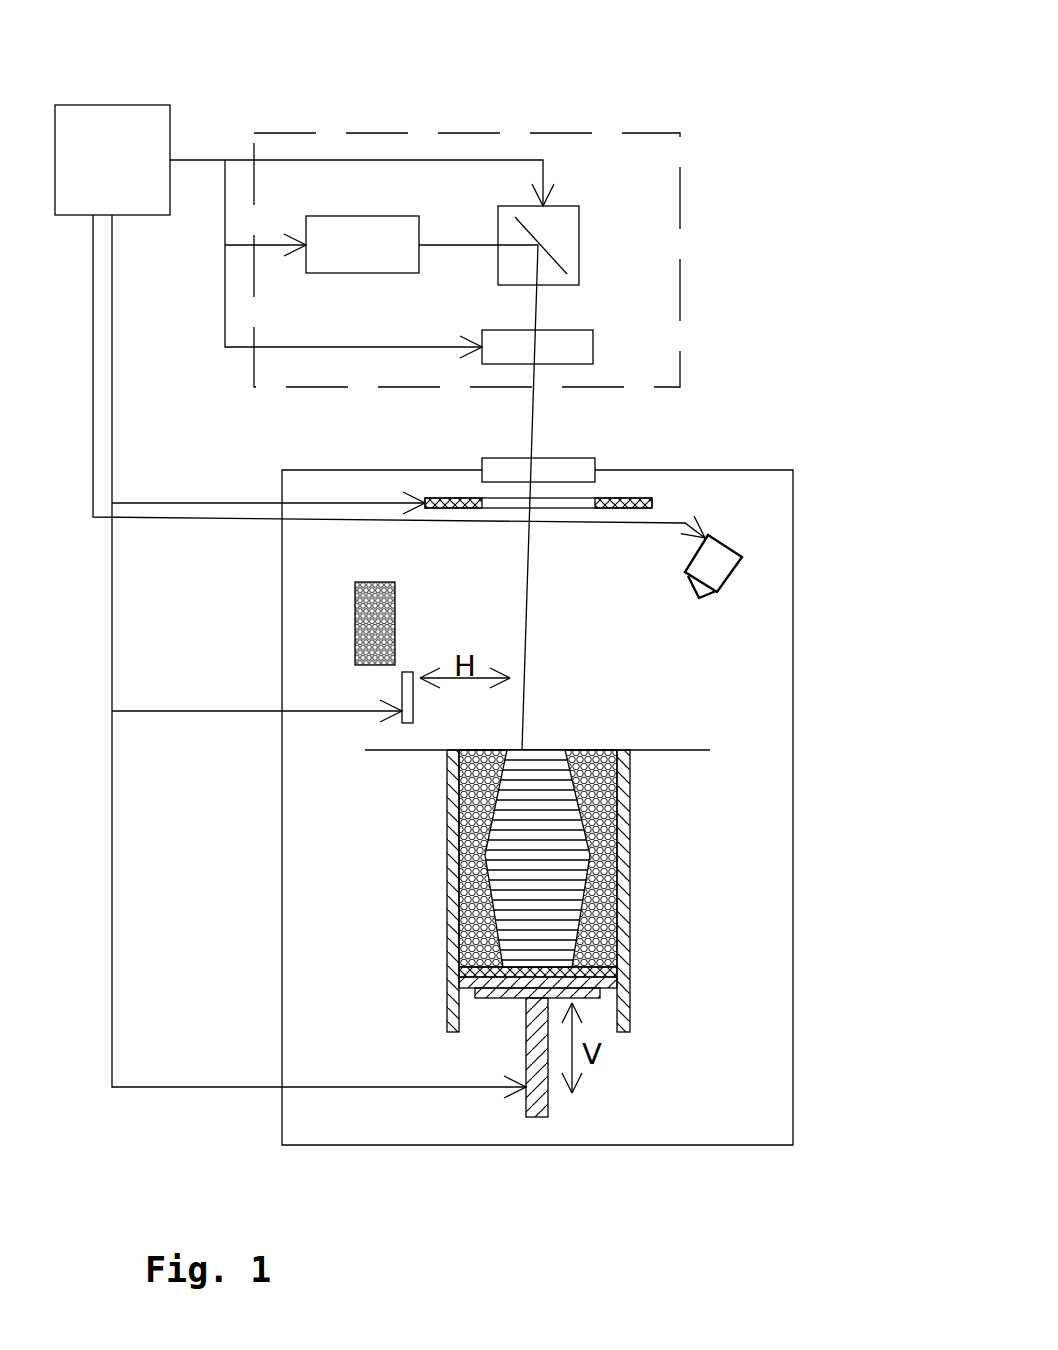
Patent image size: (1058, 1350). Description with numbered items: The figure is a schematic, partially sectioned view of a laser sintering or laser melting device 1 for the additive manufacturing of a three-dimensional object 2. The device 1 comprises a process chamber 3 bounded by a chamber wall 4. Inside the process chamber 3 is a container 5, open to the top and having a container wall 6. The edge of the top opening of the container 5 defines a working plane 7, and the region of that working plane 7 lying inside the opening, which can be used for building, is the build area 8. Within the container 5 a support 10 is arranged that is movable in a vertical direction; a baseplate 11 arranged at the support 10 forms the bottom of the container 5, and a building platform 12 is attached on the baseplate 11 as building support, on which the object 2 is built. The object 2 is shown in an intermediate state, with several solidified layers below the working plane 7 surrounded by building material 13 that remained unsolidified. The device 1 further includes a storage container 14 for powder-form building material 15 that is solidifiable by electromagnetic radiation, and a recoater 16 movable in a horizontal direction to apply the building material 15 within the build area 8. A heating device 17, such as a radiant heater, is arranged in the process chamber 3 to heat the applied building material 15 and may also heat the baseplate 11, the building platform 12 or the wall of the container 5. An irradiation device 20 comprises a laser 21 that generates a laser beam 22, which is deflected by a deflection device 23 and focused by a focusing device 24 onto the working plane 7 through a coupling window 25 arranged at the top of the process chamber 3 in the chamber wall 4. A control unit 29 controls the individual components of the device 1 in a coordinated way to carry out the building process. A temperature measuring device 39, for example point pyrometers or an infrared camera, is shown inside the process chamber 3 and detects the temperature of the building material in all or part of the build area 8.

The laser sintering or laser melting device 1 is at (765, 133).
The object 2 is at (553, 807).
The process chamber 3 is at (713, 507).
The chamber wall 4 is at (282, 942).
The container 5 is at (630, 948).
The container wall 6 is at (623, 890).
The working plane 7 is at (678, 750).
The build area 8 is at (593, 750).
The support 10 is at (517, 993).
The baseplate 11 is at (473, 987).
The building platform 12 is at (447, 970).
The building material 13 is at (447, 793).
The storage container 14 is at (373, 582).
The building material 15 is at (395, 625).
The recoater 16 is at (402, 700).
The heating device 17 is at (428, 499).
The irradiation device 20 is at (680, 245).
The laser 21 is at (360, 274).
The laser beam 22 is at (440, 245).
The deflection device 23 is at (567, 217).
The focusing device 24 is at (567, 340).
The coupling window 25 is at (572, 470).
The control unit 29 is at (383, 601).
The temperature measuring device 39 is at (710, 552).